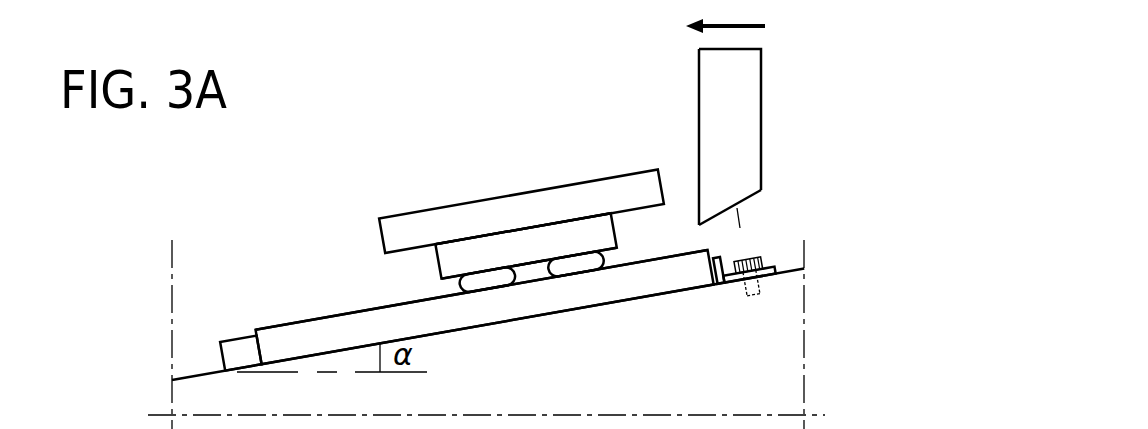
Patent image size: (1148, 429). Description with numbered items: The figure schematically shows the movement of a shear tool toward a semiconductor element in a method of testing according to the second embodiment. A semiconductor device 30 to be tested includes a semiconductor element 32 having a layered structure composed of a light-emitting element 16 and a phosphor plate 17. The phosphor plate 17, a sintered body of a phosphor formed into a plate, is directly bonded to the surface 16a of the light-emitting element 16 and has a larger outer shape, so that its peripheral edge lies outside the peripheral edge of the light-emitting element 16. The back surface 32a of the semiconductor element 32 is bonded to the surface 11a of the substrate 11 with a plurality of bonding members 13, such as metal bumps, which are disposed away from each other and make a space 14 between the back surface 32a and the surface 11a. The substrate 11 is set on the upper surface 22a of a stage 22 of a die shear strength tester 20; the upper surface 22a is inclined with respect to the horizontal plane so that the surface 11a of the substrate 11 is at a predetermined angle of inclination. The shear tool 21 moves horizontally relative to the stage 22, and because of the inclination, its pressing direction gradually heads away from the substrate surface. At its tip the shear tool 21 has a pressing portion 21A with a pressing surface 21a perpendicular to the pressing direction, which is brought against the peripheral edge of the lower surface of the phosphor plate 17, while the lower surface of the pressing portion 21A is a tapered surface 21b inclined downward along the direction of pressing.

The substrate 11 is at (499, 291).
The surface of the substrate 11a is at (318, 317).
The bonding members 13 is at (488, 282).
The space 14 is at (542, 275).
The light-emitting element 16 is at (514, 245).
The surface of the light-emitting element 16a is at (452, 238).
The phosphor plate 17 is at (527, 203).
The die shear strength tester 20 is at (776, 134).
The shear tool 21 is at (765, 151).
The pressing portion 21A is at (727, 194).
The pressing surface 21a is at (698, 194).
The tapered surface 21b is at (737, 207).
The stage 22 is at (529, 302).
The upper surface of the stage 22a is at (357, 348).
The semiconductor device 30 is at (572, 130).
The semiconductor element 32 is at (480, 245).
The back surface of the semiconductor element 32a is at (523, 265).